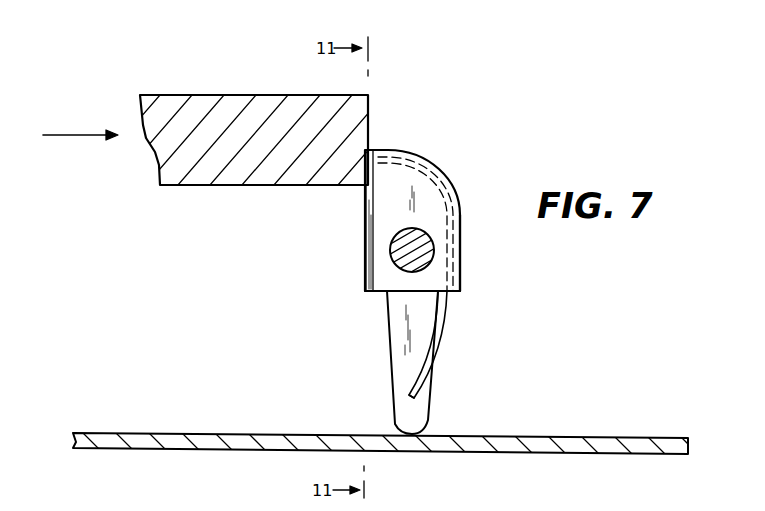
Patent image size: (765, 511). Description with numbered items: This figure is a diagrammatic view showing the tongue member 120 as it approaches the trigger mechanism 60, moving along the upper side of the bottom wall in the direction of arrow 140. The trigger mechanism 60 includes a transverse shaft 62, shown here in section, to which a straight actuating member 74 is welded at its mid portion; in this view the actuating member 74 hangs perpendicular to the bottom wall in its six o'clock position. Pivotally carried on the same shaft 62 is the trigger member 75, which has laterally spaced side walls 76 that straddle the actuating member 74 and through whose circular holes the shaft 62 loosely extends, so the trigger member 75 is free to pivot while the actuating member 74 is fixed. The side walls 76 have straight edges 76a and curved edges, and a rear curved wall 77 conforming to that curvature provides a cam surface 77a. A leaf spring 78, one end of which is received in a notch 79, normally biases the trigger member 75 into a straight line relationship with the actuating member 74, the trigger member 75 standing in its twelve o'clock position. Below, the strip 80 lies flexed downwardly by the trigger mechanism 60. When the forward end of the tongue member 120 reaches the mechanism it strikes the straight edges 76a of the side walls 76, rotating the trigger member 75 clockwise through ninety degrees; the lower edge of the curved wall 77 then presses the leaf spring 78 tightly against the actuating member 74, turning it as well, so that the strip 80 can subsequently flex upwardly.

The tongue member 120 is at (263, 95).
The arrow 140 is at (79, 134).
The trigger member 75 is at (421, 150).
The cam surface 77a is at (436, 176).
The side walls 76 is at (380, 200).
The straight edges 76a is at (365, 272).
The rear curved wall 77 is at (462, 259).
The transverse shaft 62 is at (391, 237).
The actuating member 74 is at (390, 365).
The leaf spring 78 is at (451, 311).
The notch 79 is at (424, 384).
The trigger mechanism 60 is at (309, 322).
The strip 80 is at (572, 437).